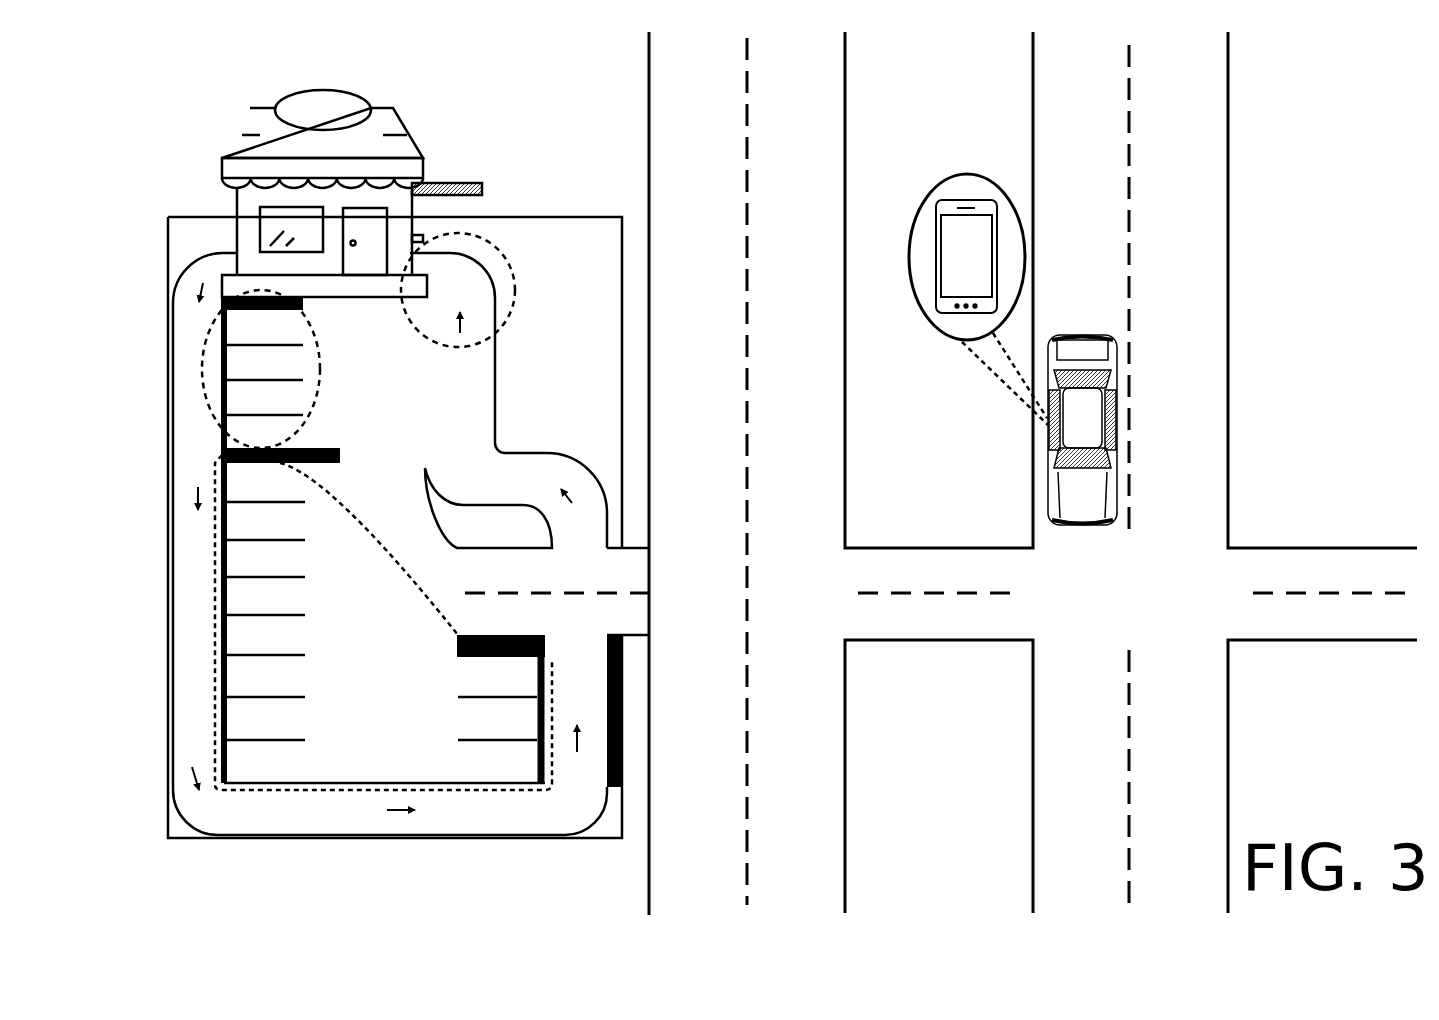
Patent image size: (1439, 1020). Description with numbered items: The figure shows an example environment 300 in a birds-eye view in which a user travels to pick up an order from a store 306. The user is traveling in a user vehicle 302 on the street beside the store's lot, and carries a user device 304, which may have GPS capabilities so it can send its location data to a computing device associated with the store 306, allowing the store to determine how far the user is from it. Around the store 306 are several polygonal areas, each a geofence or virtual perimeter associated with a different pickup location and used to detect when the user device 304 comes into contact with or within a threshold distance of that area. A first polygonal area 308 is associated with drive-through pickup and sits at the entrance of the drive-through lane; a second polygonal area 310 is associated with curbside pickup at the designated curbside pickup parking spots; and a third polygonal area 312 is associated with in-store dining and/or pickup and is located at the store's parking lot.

The example environment 300 is at (116, 66).
The user vehicle 302 is at (1065, 485).
The user device 304 is at (952, 200).
The store 306 is at (403, 118).
The first polygonal area 308 is at (502, 323).
The second polygonal area 310 is at (320, 382).
The third polygonal area 312 is at (418, 593).